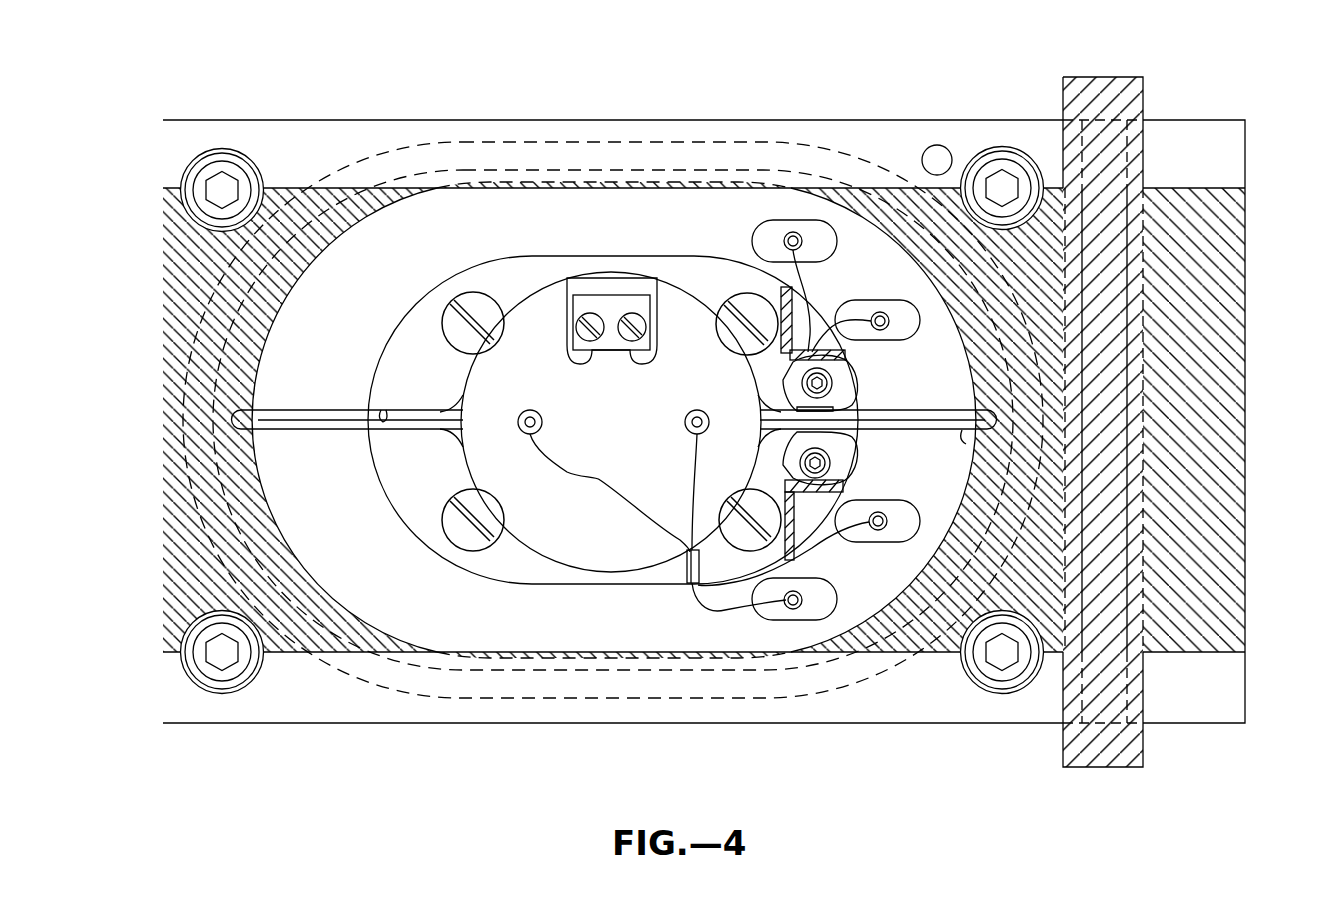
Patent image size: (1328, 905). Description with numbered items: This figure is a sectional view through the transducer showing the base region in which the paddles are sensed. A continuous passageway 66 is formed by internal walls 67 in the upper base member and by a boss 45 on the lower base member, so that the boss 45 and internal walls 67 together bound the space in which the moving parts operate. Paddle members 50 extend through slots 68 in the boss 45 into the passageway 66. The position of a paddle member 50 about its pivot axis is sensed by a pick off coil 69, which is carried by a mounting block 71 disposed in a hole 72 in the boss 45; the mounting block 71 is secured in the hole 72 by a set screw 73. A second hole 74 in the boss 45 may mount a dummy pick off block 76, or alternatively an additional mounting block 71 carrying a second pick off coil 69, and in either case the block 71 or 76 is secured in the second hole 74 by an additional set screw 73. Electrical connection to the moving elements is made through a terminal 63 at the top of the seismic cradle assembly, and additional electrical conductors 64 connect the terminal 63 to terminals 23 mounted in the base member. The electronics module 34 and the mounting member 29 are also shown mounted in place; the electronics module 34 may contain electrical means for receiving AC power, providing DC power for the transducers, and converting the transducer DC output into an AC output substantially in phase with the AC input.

The terminals 23 is at (790, 237).
The mounting member 29 is at (1120, 77).
The electronics module 34 is at (1247, 215).
The boss 45 is at (441, 287).
The paddle members 50 is at (973, 411).
The terminal 63 is at (541, 422).
The electrical conductors 64 is at (600, 452).
The continuous passageway 66 is at (887, 272).
The internal walls 67 is at (972, 352).
The slots 68 is at (384, 410).
The pick off coil 69 is at (851, 406).
The mounting block 71 is at (845, 362).
The hole 72 is at (811, 315).
The set screw 73 is at (802, 383).
The second hole 74 is at (845, 528).
The dummy pick off block 76 is at (845, 484).